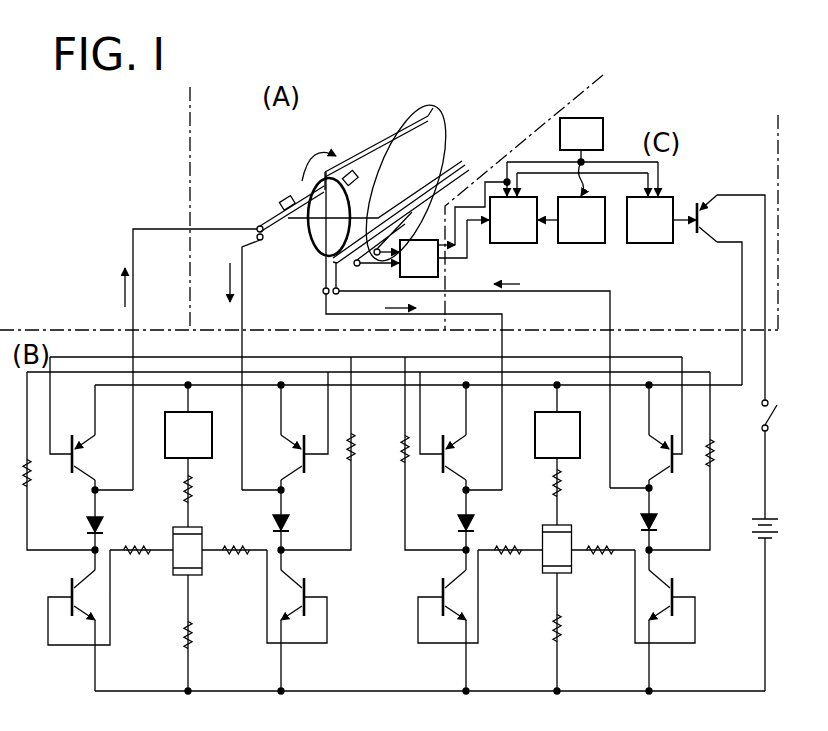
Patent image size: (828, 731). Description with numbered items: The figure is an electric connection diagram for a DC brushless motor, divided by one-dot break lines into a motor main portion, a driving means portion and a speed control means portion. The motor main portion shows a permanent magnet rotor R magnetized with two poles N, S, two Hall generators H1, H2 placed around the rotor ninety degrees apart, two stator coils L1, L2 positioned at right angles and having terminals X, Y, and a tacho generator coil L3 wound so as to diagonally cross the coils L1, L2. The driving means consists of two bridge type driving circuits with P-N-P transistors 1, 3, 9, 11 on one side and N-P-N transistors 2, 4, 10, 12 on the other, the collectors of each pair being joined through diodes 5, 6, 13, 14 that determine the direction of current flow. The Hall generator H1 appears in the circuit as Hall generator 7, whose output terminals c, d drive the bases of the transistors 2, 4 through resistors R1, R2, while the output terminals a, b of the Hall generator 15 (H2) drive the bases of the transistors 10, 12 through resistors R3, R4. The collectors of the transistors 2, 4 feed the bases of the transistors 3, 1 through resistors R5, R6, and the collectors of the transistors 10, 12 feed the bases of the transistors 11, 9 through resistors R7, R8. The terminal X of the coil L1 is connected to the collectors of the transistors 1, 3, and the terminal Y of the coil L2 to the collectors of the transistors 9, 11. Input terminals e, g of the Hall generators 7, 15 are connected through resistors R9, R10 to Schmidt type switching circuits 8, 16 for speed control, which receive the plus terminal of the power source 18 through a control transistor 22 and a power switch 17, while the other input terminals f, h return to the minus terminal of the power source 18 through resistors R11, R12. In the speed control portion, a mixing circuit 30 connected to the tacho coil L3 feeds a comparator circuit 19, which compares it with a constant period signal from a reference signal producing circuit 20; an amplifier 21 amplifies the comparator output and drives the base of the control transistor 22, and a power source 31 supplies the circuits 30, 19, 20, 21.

The P-N-P transistor 1 is at (85, 450).
The N-P-N transistor 2 is at (78, 582).
The P-N-P transistor 3 is at (298, 452).
The N-P-N transistor 4 is at (310, 592).
The diode 5 is at (87, 530).
The diode 6 is at (290, 527).
The Hall generator 7 is at (173, 566).
The switching circuit 8 is at (188, 421).
The P-N-P transistor 9 is at (449, 452).
The N-P-N transistor 10 is at (438, 592).
The P-N-P transistor 11 is at (667, 452).
The N-P-N transistor 12 is at (680, 592).
The diode 13 is at (456, 525).
The diode 14 is at (660, 525).
The Hall generator 15 is at (543, 568).
The switching circuit 16 is at (557, 421).
The power switch 17 is at (758, 410).
The power source 18 is at (755, 528).
The comparator circuit 19 is at (513, 220).
The reference signal producing circuit 20 is at (581, 220).
The amplifier 21 is at (650, 220).
The control transistor 22 is at (712, 236).
The mixing circuit 30 is at (430, 272).
The power source 31 is at (598, 117).
The resistor R1 is at (137, 557).
The resistor R2 is at (236, 557).
The resistor R3 is at (506, 557).
The resistor R4 is at (608, 556).
The resistor R5 is at (32, 478).
The resistor R6 is at (347, 458).
The resistor R7 is at (401, 458).
The resistor R8 is at (715, 456).
The resistor R9 is at (182, 492).
The resistor R10 is at (552, 483).
The resistor R11 is at (196, 638).
The resistor R12 is at (565, 630).
The Hall generator H1 is at (280, 200).
The Hall generator H2 is at (352, 170).
The stator coil L1 is at (466, 167).
The stator coil L2 is at (390, 130).
The tacho generator coil L3 is at (414, 108).
The permanent magnet rotor R is at (435, 108).
The magnet north pole N is at (329, 217).
The magnet south pole S is at (317, 237).
The coil terminal X is at (268, 242).
The coil terminal Y is at (331, 301).
The output terminal a is at (536, 547).
The output terminal b is at (578, 548).
The output terminal c is at (165, 548).
The output terminal d is at (210, 548).
The input terminal e is at (190, 522).
The input terminal f is at (190, 600).
The input terminal g is at (560, 512).
The input terminal h is at (565, 598).